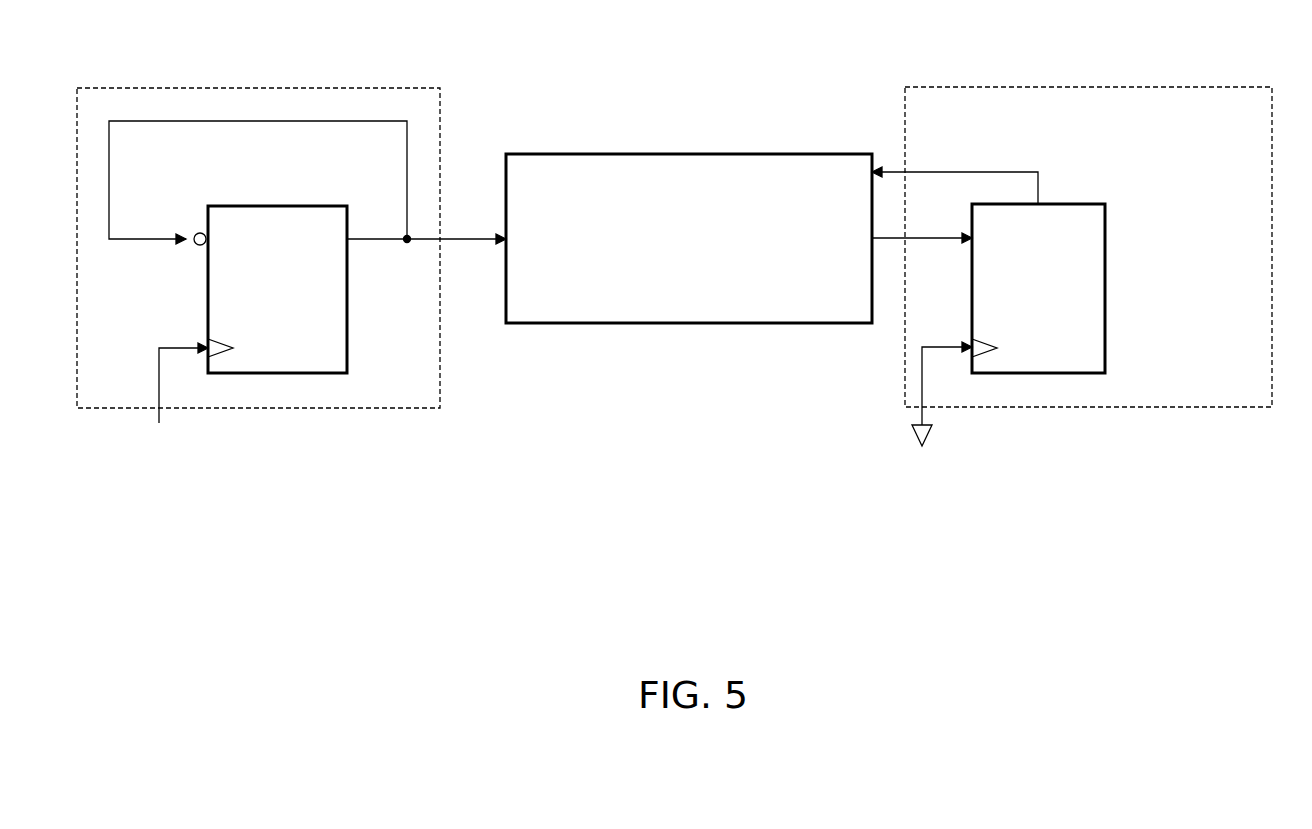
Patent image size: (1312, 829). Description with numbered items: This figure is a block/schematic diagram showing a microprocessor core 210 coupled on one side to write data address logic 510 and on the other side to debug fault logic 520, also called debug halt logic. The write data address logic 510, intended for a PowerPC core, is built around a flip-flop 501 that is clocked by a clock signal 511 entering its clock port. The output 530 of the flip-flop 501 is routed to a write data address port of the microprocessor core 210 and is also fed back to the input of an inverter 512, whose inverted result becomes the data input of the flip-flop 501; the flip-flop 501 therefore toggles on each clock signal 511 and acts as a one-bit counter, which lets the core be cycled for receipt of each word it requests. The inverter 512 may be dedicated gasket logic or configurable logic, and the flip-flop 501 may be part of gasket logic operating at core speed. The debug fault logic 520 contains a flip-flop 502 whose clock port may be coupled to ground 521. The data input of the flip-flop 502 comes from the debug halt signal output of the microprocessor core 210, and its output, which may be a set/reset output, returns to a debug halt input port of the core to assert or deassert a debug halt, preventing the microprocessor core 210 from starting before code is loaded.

The write data address logic 510 is at (407, 88).
The debug fault logic 520 is at (1238, 87).
The output 530 is at (205, 121).
The inverter 512 is at (198, 248).
The flip-flop 501 is at (263, 310).
The clock signal 511 is at (159, 423).
The microprocessor core 210 is at (674, 260).
The flip-flop 502 is at (1023, 309).
The ground 521 is at (928, 433).